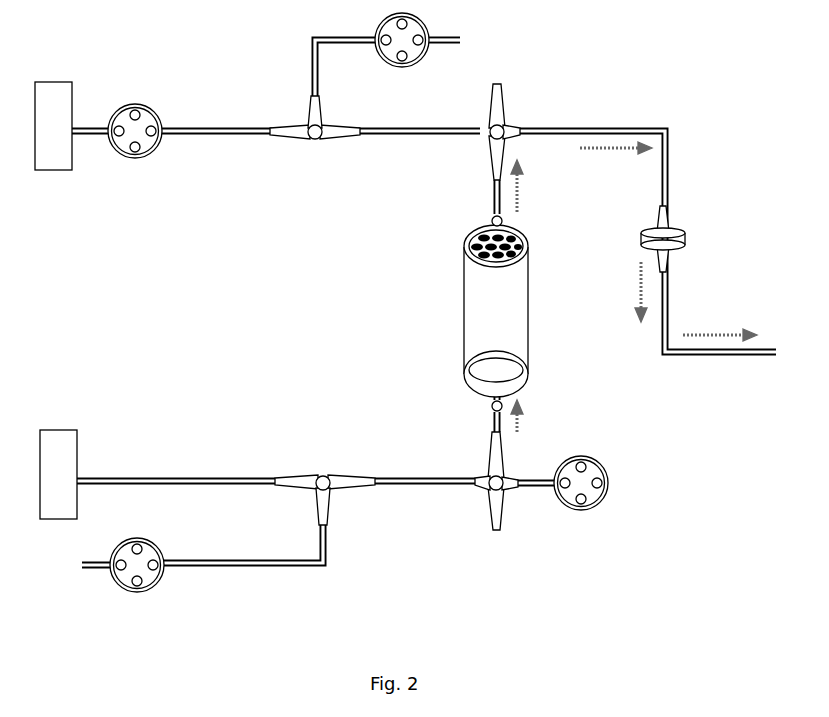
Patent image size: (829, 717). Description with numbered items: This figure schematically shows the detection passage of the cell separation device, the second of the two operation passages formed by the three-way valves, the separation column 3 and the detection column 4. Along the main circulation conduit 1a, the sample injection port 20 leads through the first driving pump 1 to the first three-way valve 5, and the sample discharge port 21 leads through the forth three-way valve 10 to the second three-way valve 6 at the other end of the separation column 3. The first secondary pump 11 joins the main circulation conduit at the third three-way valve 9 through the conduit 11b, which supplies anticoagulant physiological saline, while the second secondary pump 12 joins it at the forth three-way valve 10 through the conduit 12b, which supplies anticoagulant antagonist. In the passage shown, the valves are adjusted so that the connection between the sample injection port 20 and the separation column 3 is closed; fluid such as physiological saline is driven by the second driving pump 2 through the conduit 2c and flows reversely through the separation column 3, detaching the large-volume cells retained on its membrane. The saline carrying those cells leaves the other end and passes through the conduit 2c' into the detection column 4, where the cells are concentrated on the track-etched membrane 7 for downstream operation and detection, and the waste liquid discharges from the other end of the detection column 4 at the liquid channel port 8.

The first driving pump 1 is at (135, 158).
The main circulation conduit 1a is at (212, 126).
The second driving pump 2 is at (600, 462).
The conduit connecting the second driving pump to the main circulation conduit 2c is at (551, 438).
The conduit connecting the detection column to the main circulation conduit 2c' is at (648, 216).
The separation column 3 is at (508, 330).
The detection column 4 is at (680, 230).
The first three-way valve 5 is at (508, 112).
The second three-way valve 6 is at (500, 520).
The track-etched membrane 7 is at (520, 232).
The liquid channel port 8 is at (668, 215).
The third three-way valve 9 is at (318, 140).
The forth three-way valve 10 is at (340, 472).
The first secondary pump 11 is at (423, 58).
The conduit connecting the first secondary pump to the main circulation conduit 11b is at (310, 100).
The second secondary pump 12 is at (162, 585).
The conduit connecting the second secondary pump to the main circulation conduit 12b is at (332, 545).
The sample injection port 20 is at (52, 100).
The sample discharge port 21 is at (58, 450).